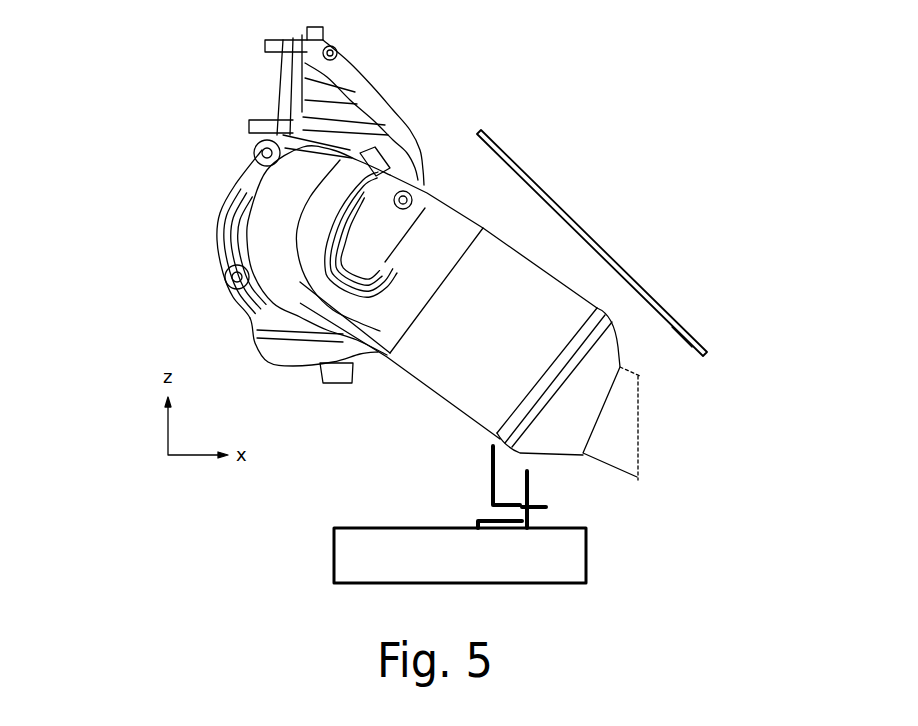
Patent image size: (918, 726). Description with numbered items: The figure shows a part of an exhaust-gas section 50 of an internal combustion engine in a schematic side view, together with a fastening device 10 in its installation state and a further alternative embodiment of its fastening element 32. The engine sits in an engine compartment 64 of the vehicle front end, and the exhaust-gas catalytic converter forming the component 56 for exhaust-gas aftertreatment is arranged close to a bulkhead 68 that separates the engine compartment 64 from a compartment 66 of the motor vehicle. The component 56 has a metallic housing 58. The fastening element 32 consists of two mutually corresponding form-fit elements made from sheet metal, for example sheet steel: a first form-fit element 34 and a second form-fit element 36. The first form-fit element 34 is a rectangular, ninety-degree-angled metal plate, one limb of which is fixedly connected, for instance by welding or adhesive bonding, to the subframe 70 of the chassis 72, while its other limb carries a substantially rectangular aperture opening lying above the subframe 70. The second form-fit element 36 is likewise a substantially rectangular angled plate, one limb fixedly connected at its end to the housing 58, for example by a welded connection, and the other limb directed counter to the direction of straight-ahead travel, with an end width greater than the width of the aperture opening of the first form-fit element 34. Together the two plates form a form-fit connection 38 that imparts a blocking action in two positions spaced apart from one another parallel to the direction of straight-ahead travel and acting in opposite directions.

The fastening device 10 is at (687, 520).
The fastening element 32 is at (393, 451).
The first form-fit element 34 is at (533, 474).
The second form-fit element 36 is at (485, 470).
The form-fit connection 38 is at (537, 538).
The exhaust-gas section 50 is at (197, 74).
The component for exhaust-gas aftertreatment 56 is at (506, 233).
The metallic housing 58 is at (548, 280).
The engine compartment 64 is at (207, 203).
The compartment 66 is at (677, 239).
The bulkhead 68 is at (684, 325).
The subframe 70 is at (360, 544).
The chassis 72 is at (585, 603).